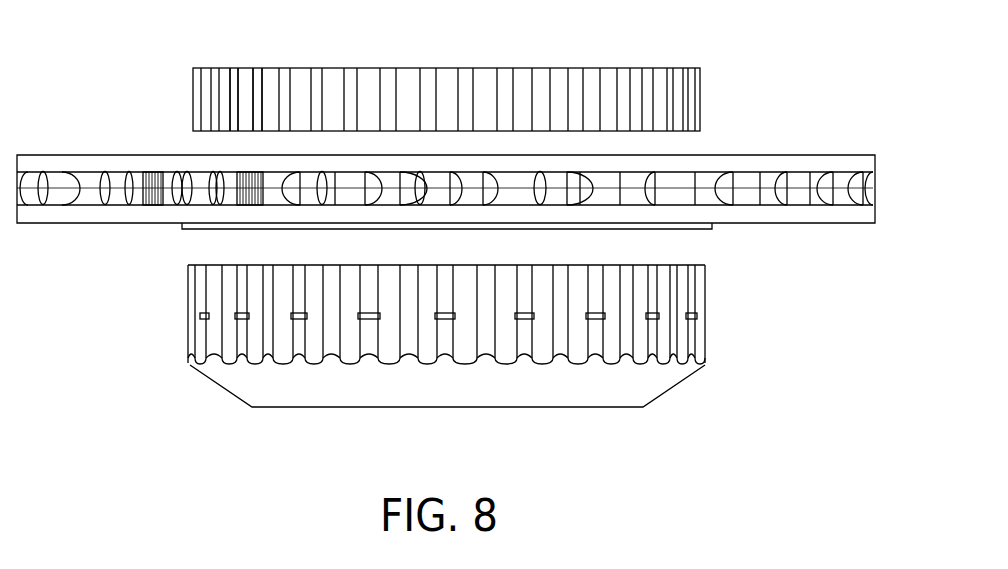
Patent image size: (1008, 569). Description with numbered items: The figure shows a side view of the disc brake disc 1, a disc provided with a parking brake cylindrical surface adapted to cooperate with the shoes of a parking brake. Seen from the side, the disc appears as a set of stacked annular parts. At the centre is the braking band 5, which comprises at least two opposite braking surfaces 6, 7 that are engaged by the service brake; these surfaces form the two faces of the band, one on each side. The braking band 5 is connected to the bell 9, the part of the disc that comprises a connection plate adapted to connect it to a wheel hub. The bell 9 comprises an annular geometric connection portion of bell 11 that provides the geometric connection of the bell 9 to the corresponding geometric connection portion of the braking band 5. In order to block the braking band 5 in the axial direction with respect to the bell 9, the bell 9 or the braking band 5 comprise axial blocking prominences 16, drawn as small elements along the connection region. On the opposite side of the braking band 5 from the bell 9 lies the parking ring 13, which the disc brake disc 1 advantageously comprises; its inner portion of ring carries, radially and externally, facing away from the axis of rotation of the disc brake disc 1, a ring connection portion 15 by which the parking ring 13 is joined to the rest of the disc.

The disc brake disc 1 is at (718, 83).
The braking band 5 is at (733, 163).
The braking surface 6 is at (815, 153).
The braking surface 7 is at (778, 225).
The bell 9 is at (657, 378).
The annular geometric connection portion of bell 11 is at (230, 288).
The parking ring 13 is at (566, 100).
The ring connection portion 15 is at (267, 107).
The axial blocking prominences 16 is at (528, 322).